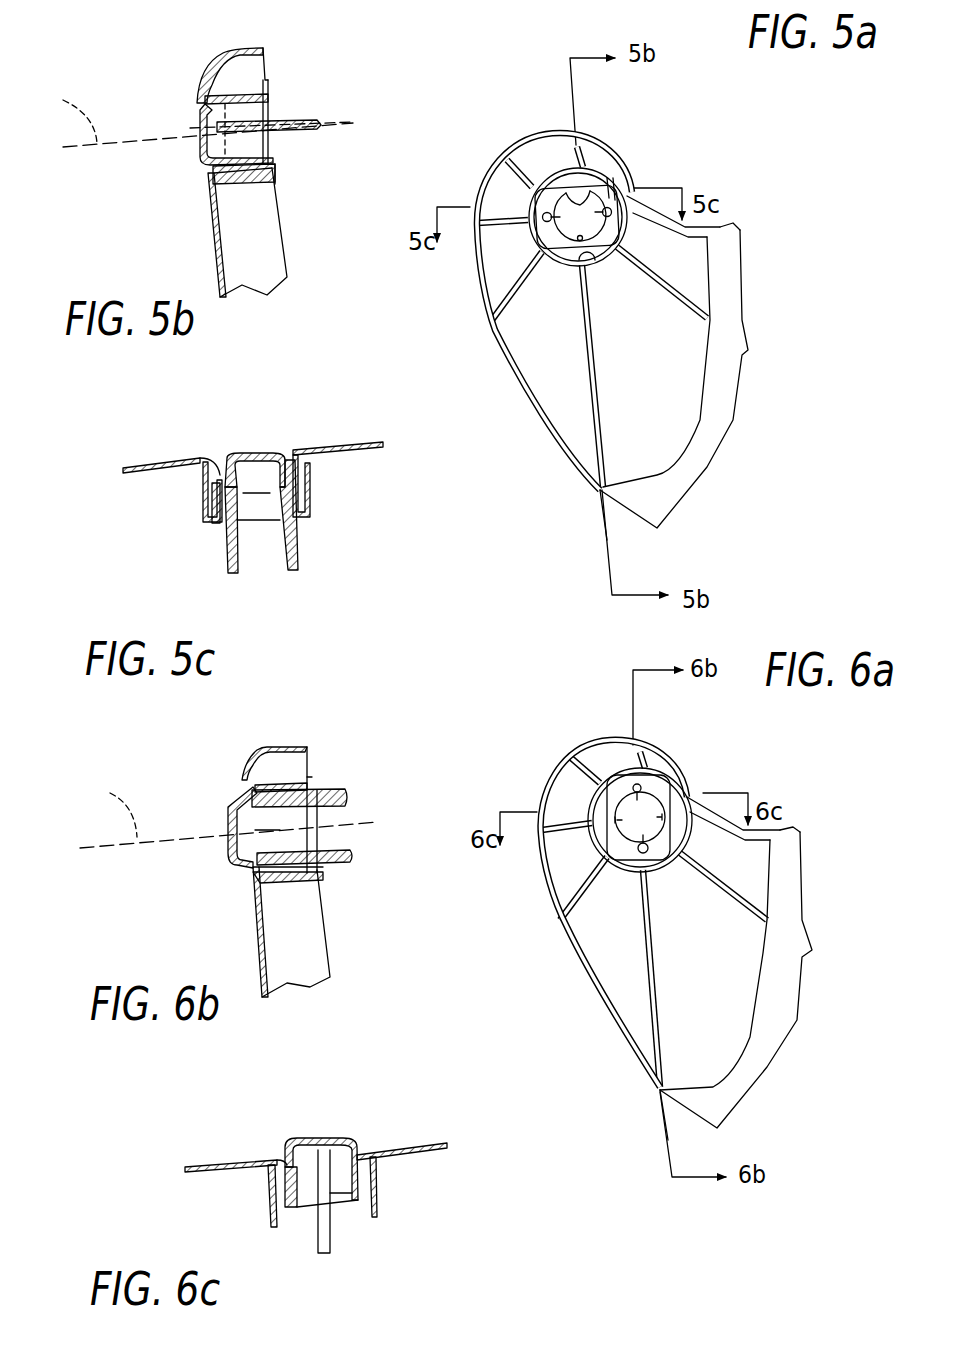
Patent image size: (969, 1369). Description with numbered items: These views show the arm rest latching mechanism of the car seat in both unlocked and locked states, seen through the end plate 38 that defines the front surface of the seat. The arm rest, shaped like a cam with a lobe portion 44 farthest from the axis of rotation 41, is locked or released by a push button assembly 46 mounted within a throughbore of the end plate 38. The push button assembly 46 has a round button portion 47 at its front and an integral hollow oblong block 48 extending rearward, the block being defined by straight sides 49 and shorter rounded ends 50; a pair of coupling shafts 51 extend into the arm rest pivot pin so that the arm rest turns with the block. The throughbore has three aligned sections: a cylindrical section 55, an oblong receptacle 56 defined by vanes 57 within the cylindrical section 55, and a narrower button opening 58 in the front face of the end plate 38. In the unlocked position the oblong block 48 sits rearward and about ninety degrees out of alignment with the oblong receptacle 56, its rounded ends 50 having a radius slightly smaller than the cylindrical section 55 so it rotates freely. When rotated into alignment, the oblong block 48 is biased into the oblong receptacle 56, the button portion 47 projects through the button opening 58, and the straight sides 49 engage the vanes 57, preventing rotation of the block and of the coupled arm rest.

In FIG. 5a, the end plate 38 is at (553, 388).
In FIG. 5b, the end plate 38 is at (247, 232).
In FIG. 5c, the end plate 38 is at (143, 460).
In FIG. 6a, the end plate 38 is at (618, 997).
In FIG. 6b, the end plate 38 is at (253, 958).
In FIG. 6c, the end plate 38 is at (235, 1157).
In FIG. 5b, the axis of rotation 41 is at (65, 114).
In FIG. 6b, the axis of rotation 41 is at (107, 808).
In FIG. 5a, the lobe portion 44 is at (460, 138).
In FIG. 6a, the lobe portion 44 is at (522, 757).
In FIG. 5b, the push button assembly 46 is at (197, 152).
In FIG. 5c, the push button assembly 46 is at (264, 450).
In FIG. 6b, the push button assembly 46 is at (222, 857).
In FIG. 6c, the push button assembly 46 is at (340, 1137).
In FIG. 5a, the button portion 47 is at (600, 188).
In FIG. 5b, the button portion 47 is at (200, 125).
In FIG. 5c, the button portion 47 is at (247, 455).
In FIG. 6a, the button portion 47 is at (640, 820).
In FIG. 6b, the button portion 47 is at (227, 817).
In FIG. 6c, the button portion 47 is at (313, 1143).
In FIG. 5a, the oblong block 48 is at (558, 257).
In FIG. 5b, the oblong block 48 is at (233, 180).
In FIG. 5c, the oblong block 48 is at (280, 553).
In FIG. 6a, the oblong block 48 is at (603, 823).
In FIG. 6b, the oblong block 48 is at (260, 913).
In FIG. 6c, the oblong block 48 is at (347, 1218).
In FIG. 5a, the straight sides 49 is at (577, 193).
In FIG. 5b, the straight sides 49 is at (232, 100).
In FIG. 5c, the straight sides 49 is at (256, 483).
In FIG. 6a, the straight sides 49 is at (668, 792).
In FIG. 6b, the straight sides 49 is at (277, 877).
In FIG. 6c, the straight sides 49 is at (350, 1205).
In FIG. 5a, the rounded ends 50 is at (625, 228).
In FIG. 5b, the rounded ends 50 is at (252, 110).
In FIG. 5c, the rounded ends 50 is at (282, 503).
In FIG. 6a, the rounded ends 50 is at (637, 788).
In FIG. 6b, the rounded ends 50 is at (267, 780).
In FIG. 6c, the rounded ends 50 is at (341, 1180).
In FIG. 5a, the coupling shafts 51 is at (543, 215).
In FIG. 5b, the coupling shafts 51 is at (293, 122).
In FIG. 5c, the coupling shafts 51 is at (303, 550).
In FIG. 6a, the coupling shafts 51 is at (612, 790).
In FIG. 6b, the coupling shafts 51 is at (323, 790).
In FIG. 6c, the coupling shafts 51 is at (325, 1257).
In FIG. 5a, the cylindrical section 55 is at (590, 264).
In FIG. 5b, the cylindrical section 55 is at (278, 167).
In FIG. 5c, the cylindrical section 55 is at (222, 522).
In FIG. 6c, the cylindrical section 55 is at (280, 1225).
In FIG. 5a, the oblong receptacle 56 is at (612, 192).
In FIG. 5c, the oblong receptacle 56 is at (210, 503).
In FIG. 6c, the oblong receptacle 56 is at (307, 1193).
In FIG. 5a, the vanes 57 is at (615, 205).
In FIG. 5c, the vanes 57 is at (203, 473).
In FIG. 6a, the vanes 57 is at (675, 795).
In FIG. 6c, the vanes 57 is at (268, 1173).
In FIG. 5a, the button opening 58 is at (582, 176).
In FIG. 5b, the button opening 58 is at (200, 100).
In FIG. 5c, the button opening 58 is at (221, 458).
In FIG. 6a, the button opening 58 is at (638, 817).
In FIG. 6b, the button opening 58 is at (243, 803).
In FIG. 6c, the button opening 58 is at (287, 1153).